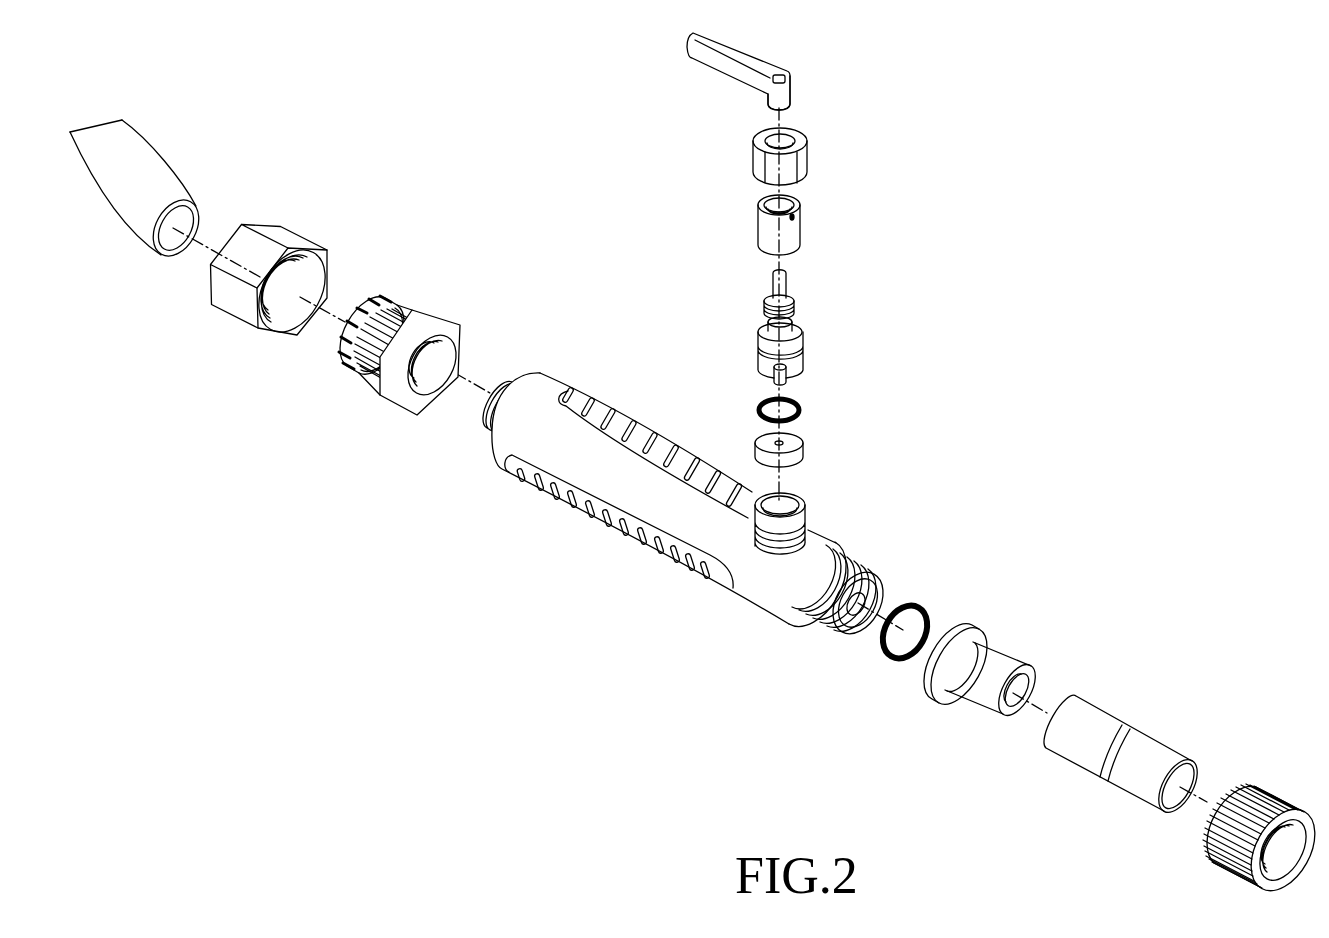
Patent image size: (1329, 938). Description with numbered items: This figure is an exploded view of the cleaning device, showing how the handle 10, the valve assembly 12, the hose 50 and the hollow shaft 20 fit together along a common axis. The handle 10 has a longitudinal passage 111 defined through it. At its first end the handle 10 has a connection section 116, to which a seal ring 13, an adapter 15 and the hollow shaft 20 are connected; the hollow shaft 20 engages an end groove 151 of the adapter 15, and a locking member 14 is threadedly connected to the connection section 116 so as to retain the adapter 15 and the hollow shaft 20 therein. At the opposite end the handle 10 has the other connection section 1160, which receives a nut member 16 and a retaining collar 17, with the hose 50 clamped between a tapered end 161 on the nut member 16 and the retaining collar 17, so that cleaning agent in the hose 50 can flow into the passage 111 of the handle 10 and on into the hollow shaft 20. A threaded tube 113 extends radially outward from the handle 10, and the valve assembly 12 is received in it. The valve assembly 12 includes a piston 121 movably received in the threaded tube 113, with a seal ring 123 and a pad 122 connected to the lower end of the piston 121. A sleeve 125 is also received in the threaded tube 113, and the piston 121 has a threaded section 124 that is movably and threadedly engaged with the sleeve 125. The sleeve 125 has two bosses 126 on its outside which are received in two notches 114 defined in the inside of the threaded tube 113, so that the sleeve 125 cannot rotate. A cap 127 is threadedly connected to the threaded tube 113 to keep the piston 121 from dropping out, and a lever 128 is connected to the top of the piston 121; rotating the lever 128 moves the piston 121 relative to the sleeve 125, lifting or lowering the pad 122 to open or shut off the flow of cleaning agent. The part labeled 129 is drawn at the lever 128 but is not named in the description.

The handle 10 is at (706, 507).
The longitudinal passage 111 is at (868, 602).
The threaded tube 113 is at (785, 498).
The notches 114 is at (763, 503).
The connection section 116 is at (861, 614).
The connection section 1160 is at (505, 388).
The valve assembly 12 is at (749, 262).
The piston 121 is at (800, 346).
The pad 122 is at (803, 457).
The seal ring 123 is at (801, 412).
The threaded section 124 is at (793, 310).
The sleeve 125 is at (804, 235).
The bosses 126 is at (795, 216).
The cap 127 is at (806, 163).
The lever 128 is at (758, 55).
The handle stem 129 is at (792, 100).
The seal ring 13 is at (903, 672).
The locking member 14 is at (1256, 779).
The adapter 15 is at (986, 702).
The end groove 151 is at (1000, 653).
The nut member 16 is at (402, 367).
The tapered end 161 is at (392, 304).
The retaining collar 17 is at (237, 315).
The hollow shaft 20 is at (1090, 779).
The hose 50 is at (118, 206).